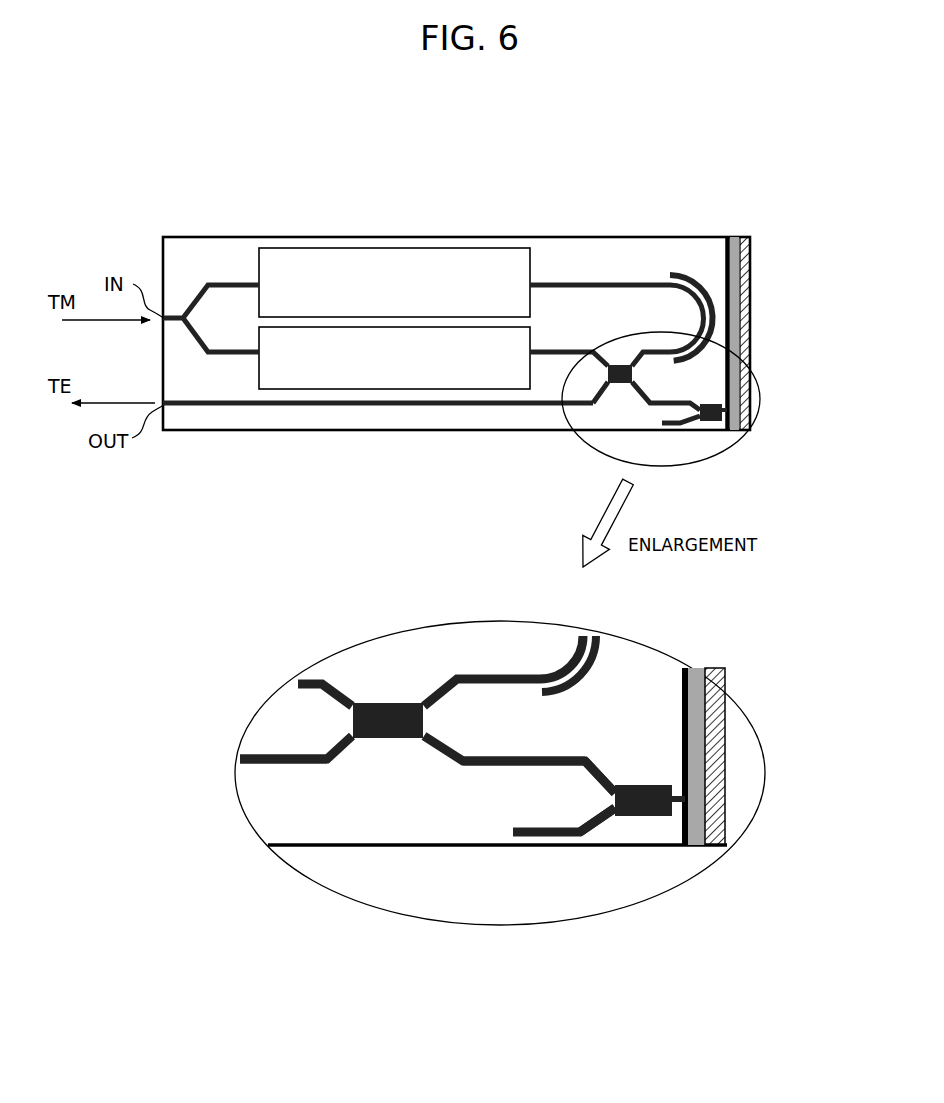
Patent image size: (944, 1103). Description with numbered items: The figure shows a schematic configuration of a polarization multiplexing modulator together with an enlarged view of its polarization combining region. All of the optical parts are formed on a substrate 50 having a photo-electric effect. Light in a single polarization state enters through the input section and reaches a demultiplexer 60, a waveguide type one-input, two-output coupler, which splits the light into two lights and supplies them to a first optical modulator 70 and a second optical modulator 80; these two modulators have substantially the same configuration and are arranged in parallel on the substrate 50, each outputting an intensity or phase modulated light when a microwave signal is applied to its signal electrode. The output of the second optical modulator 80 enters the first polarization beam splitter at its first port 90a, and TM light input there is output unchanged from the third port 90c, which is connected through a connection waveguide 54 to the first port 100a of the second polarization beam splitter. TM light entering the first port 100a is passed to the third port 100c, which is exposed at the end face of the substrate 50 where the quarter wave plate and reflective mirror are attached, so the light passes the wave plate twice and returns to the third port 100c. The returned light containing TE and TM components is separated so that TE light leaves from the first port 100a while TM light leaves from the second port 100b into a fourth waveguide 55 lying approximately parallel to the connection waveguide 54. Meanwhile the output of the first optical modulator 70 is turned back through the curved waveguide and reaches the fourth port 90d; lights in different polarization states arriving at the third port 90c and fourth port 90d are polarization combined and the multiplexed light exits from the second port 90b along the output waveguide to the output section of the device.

The substrate 50 is at (225, 238).
The connection waveguide 54 is at (548, 762).
The fourth waveguide 55 is at (536, 836).
The demultiplexer 60 is at (179, 326).
The first optical modulator 70 is at (302, 249).
The second optical modulator 80 is at (512, 328).
The first port 90a is at (343, 700).
The second port 90b is at (343, 745).
The third port 90c is at (430, 745).
The fourth port 90d is at (435, 698).
The first port 100a is at (605, 785).
The second port 100b is at (605, 817).
The third port 100c is at (682, 806).